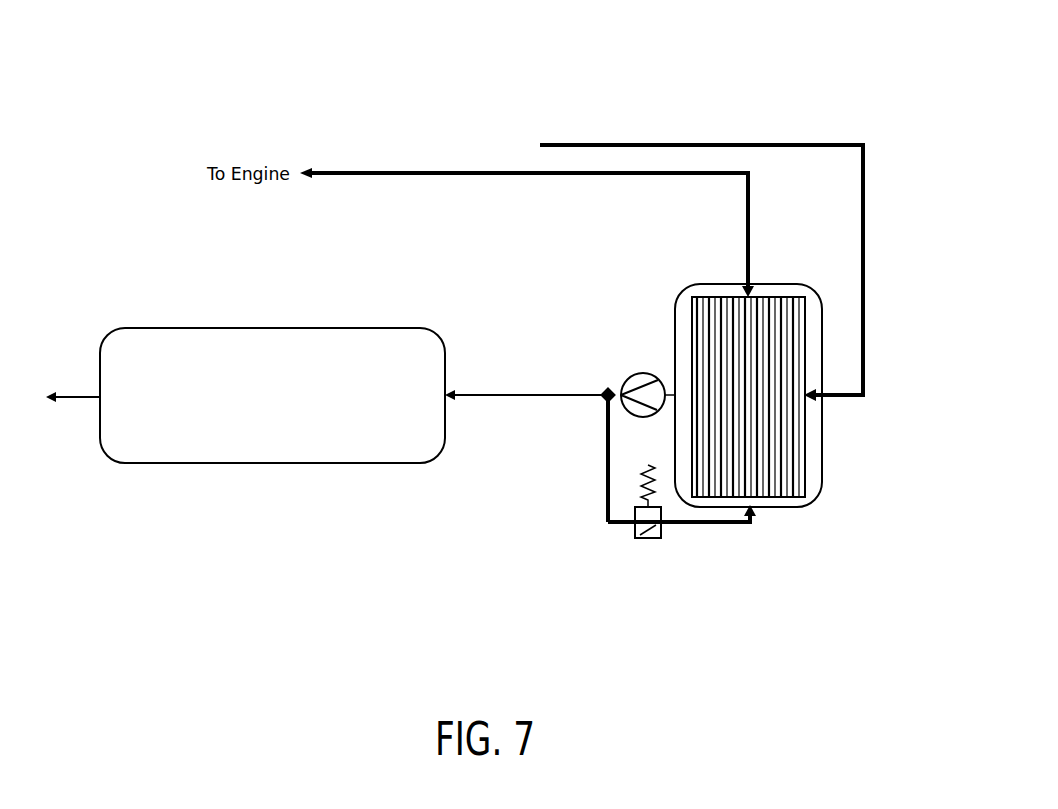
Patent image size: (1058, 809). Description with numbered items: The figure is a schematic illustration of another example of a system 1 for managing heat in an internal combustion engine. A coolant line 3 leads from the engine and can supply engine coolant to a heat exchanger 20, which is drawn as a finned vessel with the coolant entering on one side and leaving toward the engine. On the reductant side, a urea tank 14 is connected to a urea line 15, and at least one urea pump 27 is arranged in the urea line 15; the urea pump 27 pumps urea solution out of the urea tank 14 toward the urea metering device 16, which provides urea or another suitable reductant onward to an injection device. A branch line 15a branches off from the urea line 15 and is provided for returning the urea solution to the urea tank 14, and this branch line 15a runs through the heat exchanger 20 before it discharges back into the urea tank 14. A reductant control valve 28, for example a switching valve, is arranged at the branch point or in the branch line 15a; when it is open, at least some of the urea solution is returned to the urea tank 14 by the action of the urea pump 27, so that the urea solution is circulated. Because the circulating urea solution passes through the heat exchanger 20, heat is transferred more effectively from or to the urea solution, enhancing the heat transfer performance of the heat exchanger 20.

The system 1 is at (876, 108).
The coolant line 3 is at (865, 234).
The urea tank 14 is at (822, 437).
The urea line 15 is at (533, 397).
The branch line 15a is at (600, 480).
The urea metering device 16 is at (119, 448).
The heat exchanger 20 is at (765, 510).
The urea pump 27 is at (640, 364).
The reductant control valve 28 is at (648, 540).